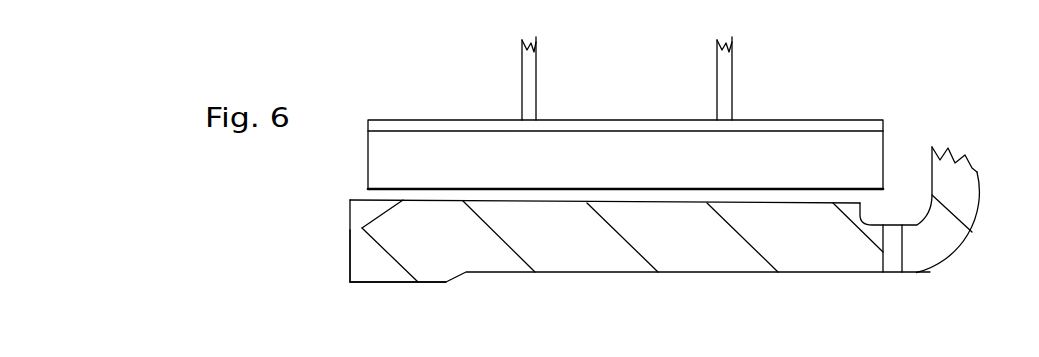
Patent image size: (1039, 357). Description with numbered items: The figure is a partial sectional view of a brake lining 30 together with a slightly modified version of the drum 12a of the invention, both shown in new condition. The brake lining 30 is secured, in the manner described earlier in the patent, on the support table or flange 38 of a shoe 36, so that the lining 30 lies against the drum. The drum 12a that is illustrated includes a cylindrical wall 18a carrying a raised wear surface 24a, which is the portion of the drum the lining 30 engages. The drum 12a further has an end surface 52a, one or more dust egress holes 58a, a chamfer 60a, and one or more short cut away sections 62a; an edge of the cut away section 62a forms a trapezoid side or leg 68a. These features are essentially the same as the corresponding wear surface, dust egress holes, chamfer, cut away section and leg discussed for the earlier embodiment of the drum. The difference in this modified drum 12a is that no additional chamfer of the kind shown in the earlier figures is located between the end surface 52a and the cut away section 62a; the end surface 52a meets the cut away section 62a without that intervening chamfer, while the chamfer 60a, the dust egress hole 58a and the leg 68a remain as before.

The brake lining 30 is at (800, 157).
The support table or flange 38 is at (420, 127).
The shoe 36 is at (525, 83).
The raised wear surface 24a is at (560, 201).
The drum 12a is at (573, 253).
The cylindrical wall 18a is at (683, 242).
The cut away section 62a is at (371, 224).
The trapezoid side or leg 68a is at (358, 225).
The end surface 52a is at (348, 266).
The dust egress hole 58a is at (892, 250).
The chamfer 60a is at (867, 217).